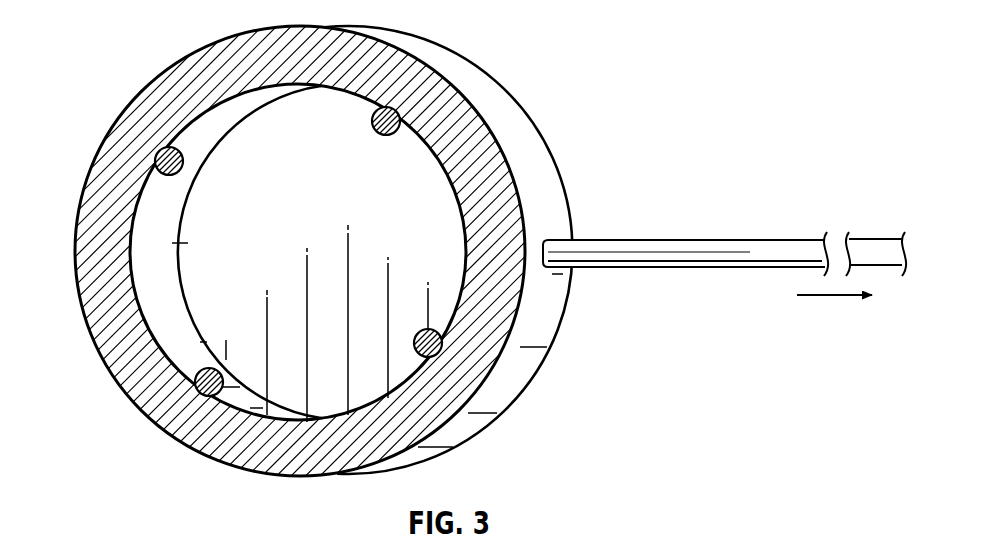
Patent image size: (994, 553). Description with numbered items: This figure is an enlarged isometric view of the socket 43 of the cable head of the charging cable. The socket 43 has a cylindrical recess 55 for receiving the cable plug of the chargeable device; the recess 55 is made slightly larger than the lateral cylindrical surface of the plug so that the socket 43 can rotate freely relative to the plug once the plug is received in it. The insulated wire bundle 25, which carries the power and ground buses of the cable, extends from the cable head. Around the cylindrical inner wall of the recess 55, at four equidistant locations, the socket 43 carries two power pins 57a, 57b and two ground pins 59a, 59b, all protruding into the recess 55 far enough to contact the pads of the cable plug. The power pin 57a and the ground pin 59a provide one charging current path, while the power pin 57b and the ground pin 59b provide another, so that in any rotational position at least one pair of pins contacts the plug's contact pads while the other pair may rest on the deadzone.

The socket 43 is at (483, 82).
The cylindrical recess 55 is at (178, 252).
The power pin 57a is at (198, 388).
The power pin 57b is at (443, 341).
The ground pin 59a is at (383, 123).
The ground pin 59b is at (172, 158).
The insulated wire bundle 25 is at (721, 219).